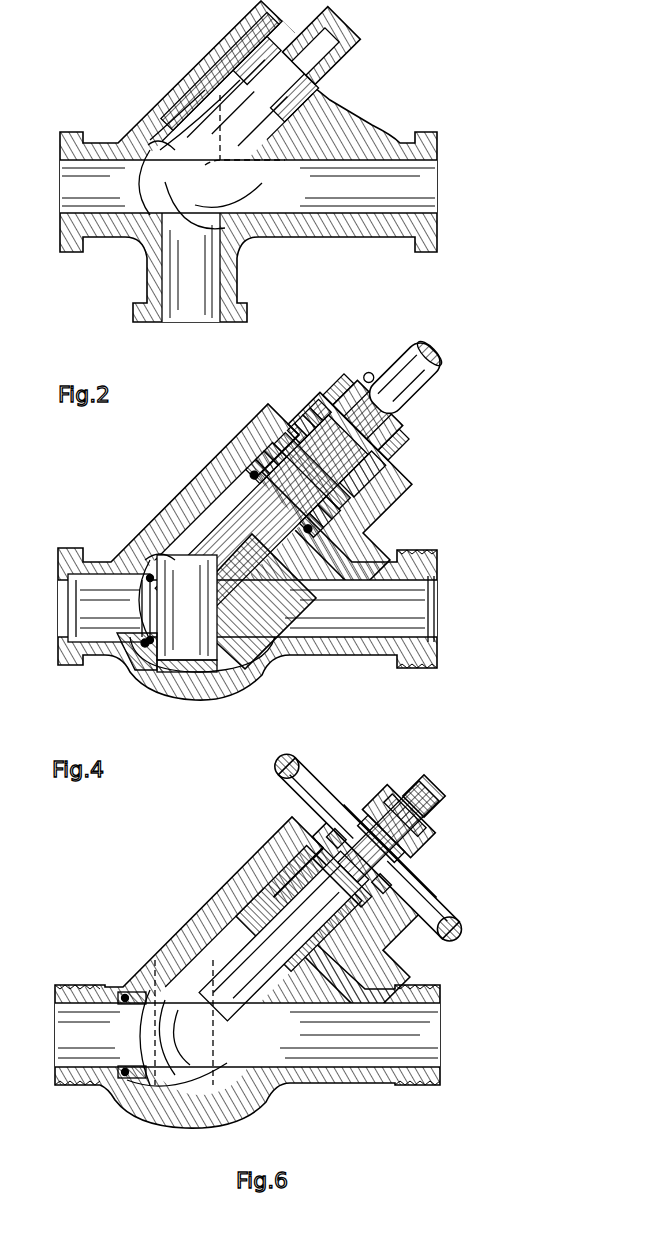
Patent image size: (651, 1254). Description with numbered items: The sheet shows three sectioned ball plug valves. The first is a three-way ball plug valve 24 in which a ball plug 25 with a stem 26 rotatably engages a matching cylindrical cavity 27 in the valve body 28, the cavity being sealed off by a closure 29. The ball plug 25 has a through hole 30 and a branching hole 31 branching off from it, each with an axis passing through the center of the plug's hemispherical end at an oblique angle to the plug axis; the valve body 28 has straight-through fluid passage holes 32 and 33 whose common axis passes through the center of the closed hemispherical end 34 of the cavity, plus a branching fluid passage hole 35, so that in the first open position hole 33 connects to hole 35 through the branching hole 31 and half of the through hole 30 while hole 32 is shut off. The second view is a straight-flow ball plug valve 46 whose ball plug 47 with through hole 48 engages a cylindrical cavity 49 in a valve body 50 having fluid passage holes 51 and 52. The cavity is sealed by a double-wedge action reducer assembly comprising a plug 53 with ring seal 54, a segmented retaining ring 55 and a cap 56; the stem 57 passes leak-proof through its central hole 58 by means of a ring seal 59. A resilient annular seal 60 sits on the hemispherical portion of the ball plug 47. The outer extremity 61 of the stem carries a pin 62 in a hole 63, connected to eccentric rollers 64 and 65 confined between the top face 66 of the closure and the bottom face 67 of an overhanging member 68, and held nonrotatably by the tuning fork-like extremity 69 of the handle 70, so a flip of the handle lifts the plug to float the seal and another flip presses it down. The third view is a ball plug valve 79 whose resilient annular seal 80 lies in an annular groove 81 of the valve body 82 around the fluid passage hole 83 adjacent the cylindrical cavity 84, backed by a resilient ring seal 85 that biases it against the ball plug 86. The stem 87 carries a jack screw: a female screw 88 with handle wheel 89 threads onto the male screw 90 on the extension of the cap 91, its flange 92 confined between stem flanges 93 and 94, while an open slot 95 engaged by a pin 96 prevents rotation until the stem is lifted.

In FIG. 2, the three-way ball plug valve 24 is at (248, 179).
In FIG. 2, the ball plug 25 is at (207, 57).
In FIG. 2, the stem 26 is at (350, 110).
In FIG. 2, the cylindrical cavity 27 is at (125, 157).
In FIG. 2, the valve body 28 is at (247, 237).
In FIG. 2, the closure 29 is at (340, 80).
In FIG. 2, the through hole 30 is at (177, 87).
In FIG. 2, the branching hole 31 is at (267, 183).
In FIG. 2, the straight-through fluid passage hole 32 is at (80, 207).
In FIG. 2, the straight-through fluid passage hole 33 is at (358, 220).
In FIG. 2, the closed hemispherical end 34 is at (112, 240).
In FIG. 2, the branching fluid passage hole 35 is at (180, 288).
In FIG. 4, the ball plug valve 46 is at (200, 675).
In FIG. 4, the ball plug 47 is at (262, 660).
In FIG. 4, the through hole 48 is at (233, 625).
In FIG. 4, the cylindrical cavity 49 is at (153, 537).
In FIG. 4, the valve body 50 is at (140, 677).
In FIG. 4, the straight-through fluid passage hole 51 is at (90, 657).
In FIG. 4, the straight-through fluid passage hole 52 is at (343, 613).
In FIG. 4, the plug 53 is at (225, 455).
In FIG. 4, the ring seal 54 is at (395, 536).
In FIG. 4, the segmented retaining ring 55 is at (240, 445).
In FIG. 4, the cap 56 is at (268, 412).
In FIG. 4, the stem 57 is at (392, 506).
In FIG. 4, the hole 58 is at (290, 440).
In FIG. 4, the ring seal 59 is at (200, 497).
In FIG. 4, the resilient annular seal 60 is at (147, 642).
In FIG. 4, the outer extremity 61 is at (438, 382).
In FIG. 4, the pin 62 is at (425, 400).
In FIG. 4, the hole 63 is at (296, 398).
In FIG. 4, the eccentric roller 64 is at (318, 402).
In FIG. 4, the eccentric roller 65 is at (400, 447).
In FIG. 4, the top face 66 is at (395, 476).
In FIG. 4, the bottom face 67 is at (340, 405).
In FIG. 4, the overhanging member 68 is at (366, 410).
In FIG. 4, the tuning fork-like extremity 69 is at (410, 425).
In FIG. 4, the handle 70 is at (430, 350).
In FIG. 6, the ball plug valve 79 is at (247, 987).
In FIG. 6, the resilient annular seal 80 is at (130, 1087).
In FIG. 6, the annular groove 81 is at (95, 1018).
In FIG. 6, the valve body 82 is at (115, 1085).
In FIG. 6, the fluid passage hole 83 is at (90, 1047).
In FIG. 6, the cylindrical cavity 84 is at (163, 982).
In FIG. 6, the resilient ring seal 85 is at (120, 997).
In FIG. 6, the ball plug 86 is at (255, 1040).
In FIG. 6, the stem 87 is at (250, 895).
In FIG. 6, the female screw 88 is at (420, 877).
In FIG. 6, the handle wheel 89 is at (300, 760).
In FIG. 6, the male screw 90 is at (315, 850).
In FIG. 6, the cap 91 is at (373, 920).
In FIG. 6, the flange 92 is at (418, 852).
In FIG. 6, the flange 93 is at (365, 795).
In FIG. 6, the flange 94 is at (382, 800).
In FIG. 6, the open slot 95 is at (303, 858).
In FIG. 6, the pin 96 is at (333, 797).